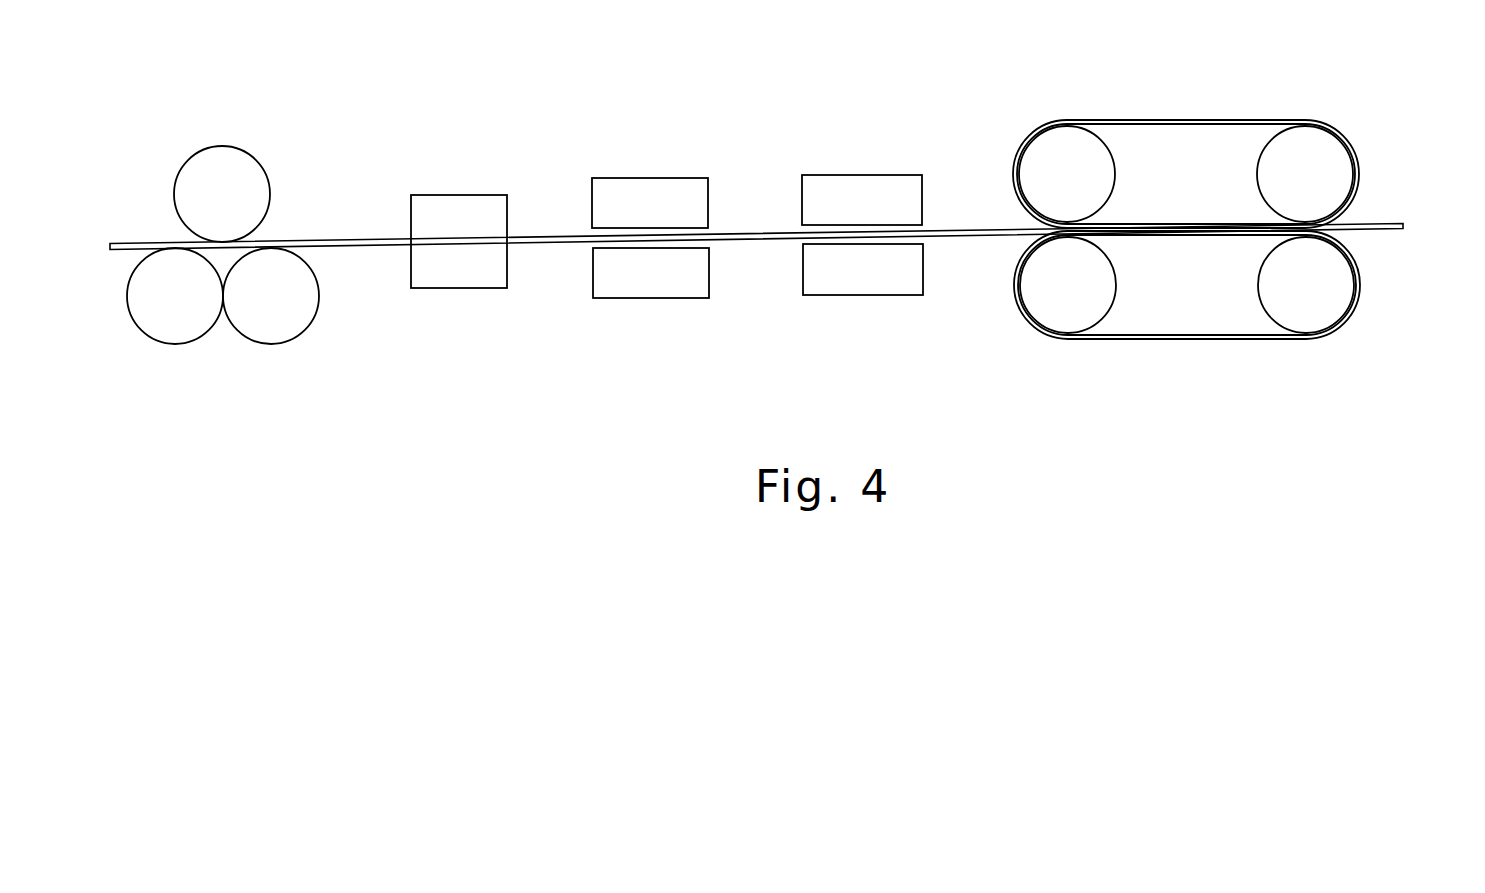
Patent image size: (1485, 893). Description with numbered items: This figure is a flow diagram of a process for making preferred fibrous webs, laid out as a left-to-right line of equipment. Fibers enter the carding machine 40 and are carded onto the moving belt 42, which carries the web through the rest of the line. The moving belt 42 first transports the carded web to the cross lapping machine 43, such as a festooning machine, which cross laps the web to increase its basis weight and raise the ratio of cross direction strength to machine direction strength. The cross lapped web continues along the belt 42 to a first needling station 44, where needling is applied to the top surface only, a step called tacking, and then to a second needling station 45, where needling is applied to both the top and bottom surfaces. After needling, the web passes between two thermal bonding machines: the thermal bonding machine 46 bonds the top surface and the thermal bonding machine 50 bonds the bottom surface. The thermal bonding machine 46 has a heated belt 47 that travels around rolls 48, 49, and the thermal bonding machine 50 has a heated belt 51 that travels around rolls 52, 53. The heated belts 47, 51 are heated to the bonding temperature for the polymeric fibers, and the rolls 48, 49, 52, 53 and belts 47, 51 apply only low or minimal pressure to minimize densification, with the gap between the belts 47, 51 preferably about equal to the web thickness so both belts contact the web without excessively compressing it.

The carding machine 40 is at (215, 175).
The moving belt 42 is at (327, 242).
The cross lapping machine 43 is at (458, 193).
The first needling station 44 is at (648, 195).
The second needling station 45 is at (858, 198).
The thermal bonding machine 46 is at (1214, 117).
The heated belt 47 is at (1225, 122).
The roll 48 is at (1047, 163).
The roll 49 is at (1313, 163).
The thermal bonding machine 50 is at (1199, 340).
The heated belt 51 is at (1242, 335).
The roll 52 is at (1070, 308).
The roll 53 is at (1313, 302).